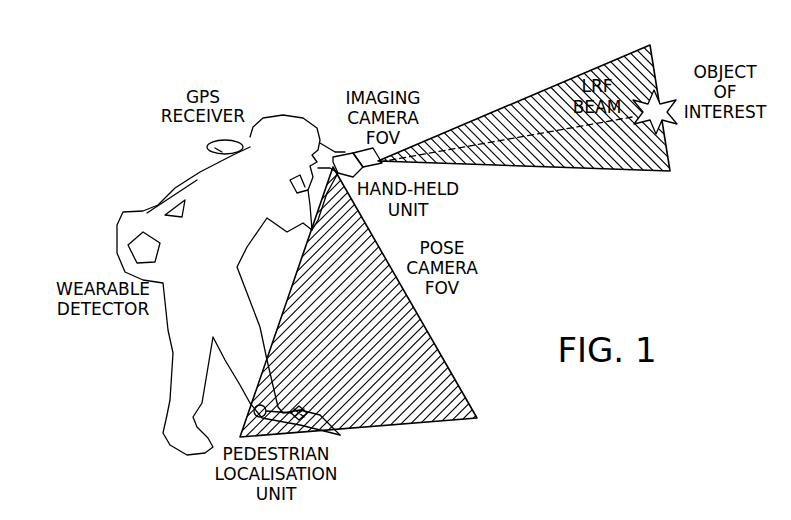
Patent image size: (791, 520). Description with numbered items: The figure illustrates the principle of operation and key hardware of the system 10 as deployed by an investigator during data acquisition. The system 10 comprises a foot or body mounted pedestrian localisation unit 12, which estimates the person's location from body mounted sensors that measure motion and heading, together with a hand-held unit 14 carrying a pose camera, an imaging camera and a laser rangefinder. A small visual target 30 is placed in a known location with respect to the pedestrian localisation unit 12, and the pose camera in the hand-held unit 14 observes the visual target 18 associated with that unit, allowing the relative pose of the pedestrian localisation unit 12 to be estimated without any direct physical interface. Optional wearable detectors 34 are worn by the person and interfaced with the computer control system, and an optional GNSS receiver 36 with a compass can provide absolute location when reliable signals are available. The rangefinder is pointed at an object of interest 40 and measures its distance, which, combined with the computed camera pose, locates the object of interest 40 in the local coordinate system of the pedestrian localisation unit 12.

The system 10 is at (533, 222).
The pedestrian localisation unit 12 is at (254, 412).
The hand-held unit 14 is at (355, 152).
The visual target 18 is at (337, 433).
The visual target 30 is at (200, 195).
The wearable detector 34 is at (140, 254).
The GNSS receiver 36 is at (217, 150).
The object of interest 40 is at (667, 122).